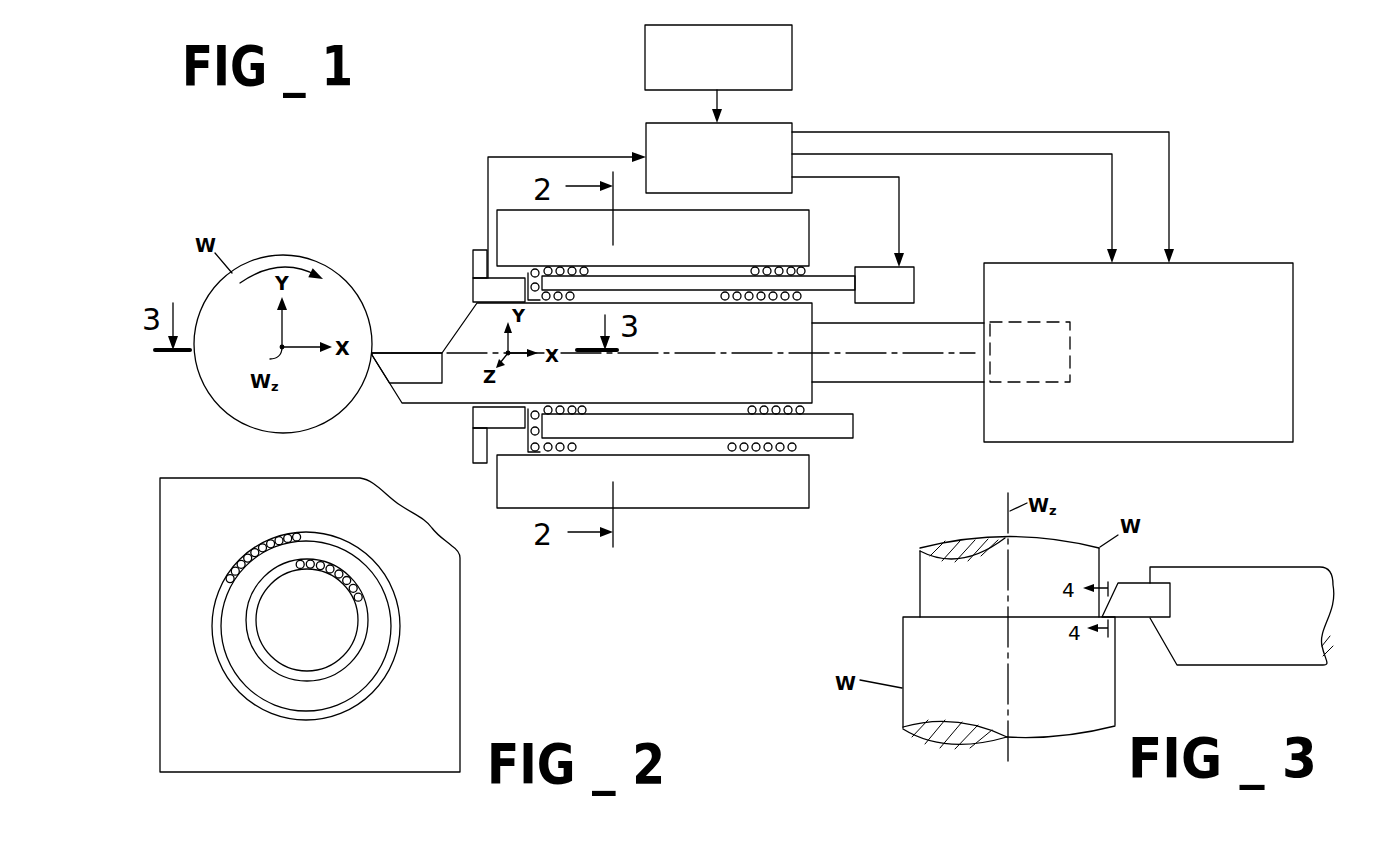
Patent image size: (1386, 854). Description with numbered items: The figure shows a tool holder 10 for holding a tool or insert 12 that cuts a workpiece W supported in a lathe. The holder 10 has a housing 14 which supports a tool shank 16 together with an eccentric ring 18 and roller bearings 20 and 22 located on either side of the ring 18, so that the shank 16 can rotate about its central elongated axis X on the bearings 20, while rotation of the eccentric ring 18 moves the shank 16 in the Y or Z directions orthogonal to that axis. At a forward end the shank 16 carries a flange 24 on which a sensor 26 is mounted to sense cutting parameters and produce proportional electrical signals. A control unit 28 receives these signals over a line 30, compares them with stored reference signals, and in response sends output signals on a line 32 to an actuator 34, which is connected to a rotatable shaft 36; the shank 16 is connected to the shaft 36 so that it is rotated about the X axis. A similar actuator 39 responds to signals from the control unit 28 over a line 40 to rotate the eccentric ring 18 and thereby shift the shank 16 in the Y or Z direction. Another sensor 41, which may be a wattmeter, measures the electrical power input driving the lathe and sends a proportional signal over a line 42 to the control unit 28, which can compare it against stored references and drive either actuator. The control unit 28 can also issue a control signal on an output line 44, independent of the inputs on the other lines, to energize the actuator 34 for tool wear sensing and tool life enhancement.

In FIG. 1, the tool holder 10 is at (900, 452).
In FIG. 1, the tool or insert 12 is at (411, 353).
In FIG. 3, the tool or insert 12 is at (1132, 580).
In FIG. 1, the housing 14 is at (747, 492).
In FIG. 2, the housing 14 is at (443, 638).
In FIG. 1, the tool shank 16 is at (813, 395).
In FIG. 2, the tool shank 16 is at (313, 620).
In FIG. 3, the tool shank 16 is at (1287, 567).
In FIG. 1, the eccentric ring 18 is at (822, 433).
In FIG. 2, the eccentric ring 18 is at (238, 602).
In FIG. 1, the roller bearings 20 is at (808, 297).
In FIG. 2, the roller bearings 20 is at (353, 583).
In FIG. 1, the roller bearings 22 is at (808, 268).
In FIG. 2, the roller bearings 22 is at (313, 532).
In FIG. 1, the flange 24 is at (470, 422).
In FIG. 1, the sensor 26 is at (478, 267).
In FIG. 1, the control unit 28 is at (788, 123).
In FIG. 1, the line 30 is at (506, 157).
In FIG. 1, the line 32 is at (1170, 178).
In FIG. 1, the actuator 34 is at (1255, 261).
In FIG. 1, the rotatable shaft 36 is at (928, 383).
In FIG. 1, the actuator 39 is at (914, 288).
In FIG. 1, the line 40 is at (900, 217).
In FIG. 1, the sensor 41 is at (735, 68).
In FIG. 1, the line 42 is at (712, 100).
In FIG. 1, the output line 44 is at (1112, 193).